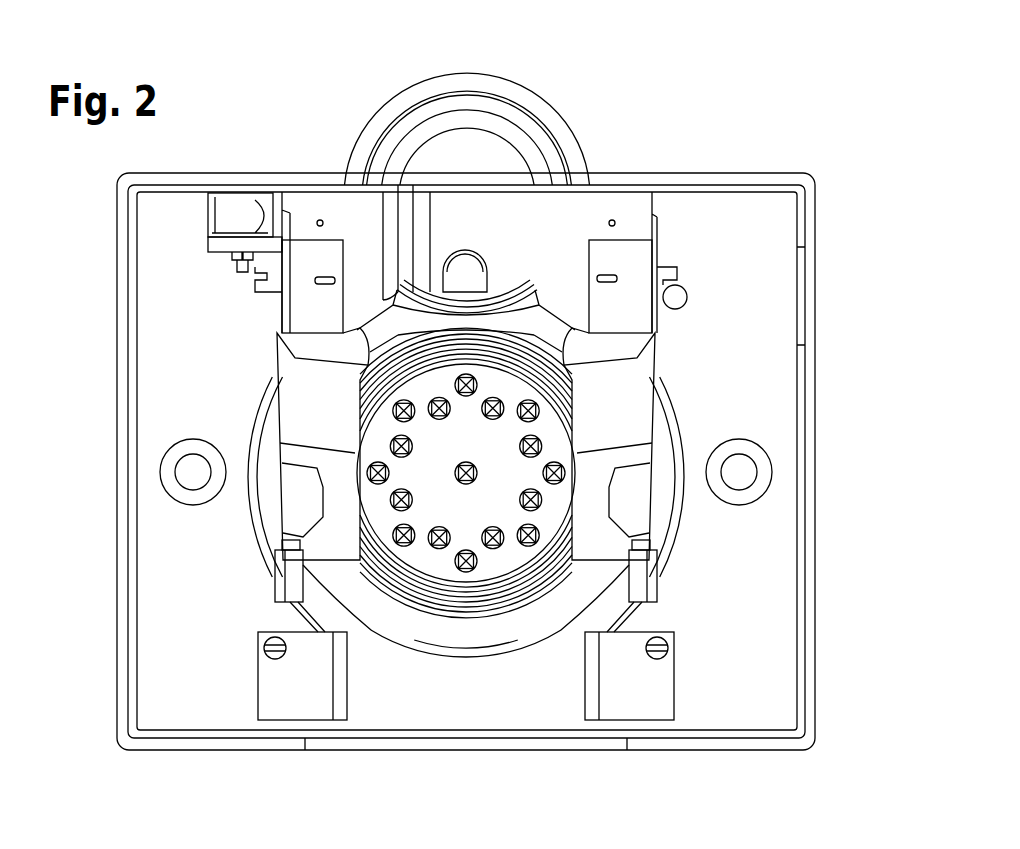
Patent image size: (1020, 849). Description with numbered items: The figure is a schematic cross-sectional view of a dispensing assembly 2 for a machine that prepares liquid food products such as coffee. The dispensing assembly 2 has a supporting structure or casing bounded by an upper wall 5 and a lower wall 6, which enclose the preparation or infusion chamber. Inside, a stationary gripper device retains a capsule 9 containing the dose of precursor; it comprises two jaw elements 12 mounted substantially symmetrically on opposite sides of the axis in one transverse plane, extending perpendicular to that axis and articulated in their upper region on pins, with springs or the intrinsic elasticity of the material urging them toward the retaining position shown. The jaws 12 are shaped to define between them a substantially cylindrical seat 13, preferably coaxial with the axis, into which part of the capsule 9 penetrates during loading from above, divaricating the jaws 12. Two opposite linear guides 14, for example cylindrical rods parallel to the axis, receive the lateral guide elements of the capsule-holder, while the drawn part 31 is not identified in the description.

The dispensing assembly 2 is at (470, 183).
The upper wall 5 is at (746, 172).
The lower wall 6 is at (683, 752).
The capsule 9 is at (578, 119).
The jaw elements 12 is at (277, 334).
The seat 13 is at (466, 520).
The linear guides 14 is at (193, 478).
The loudspeaker support ring 31 is at (250, 411).